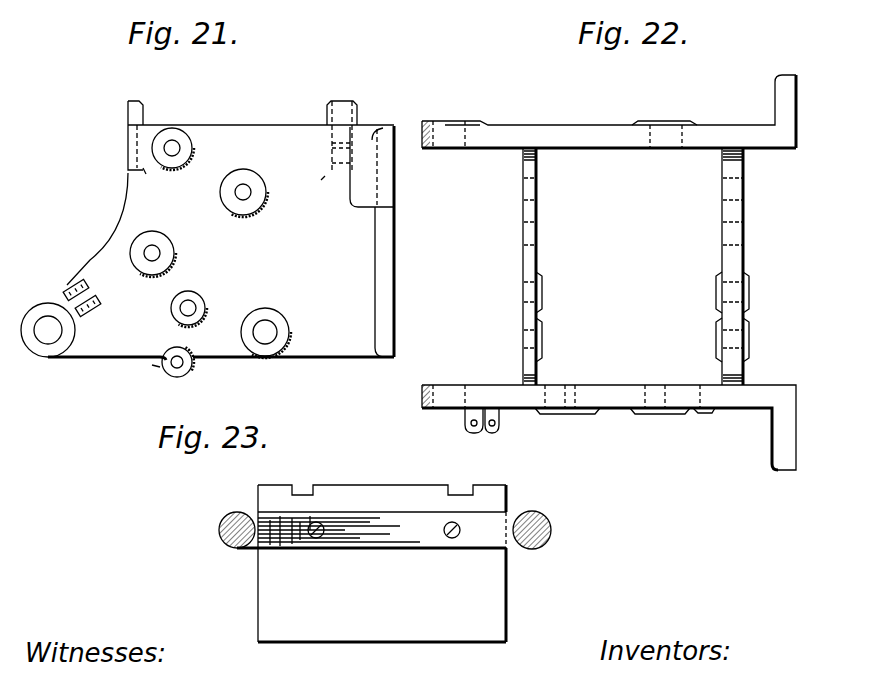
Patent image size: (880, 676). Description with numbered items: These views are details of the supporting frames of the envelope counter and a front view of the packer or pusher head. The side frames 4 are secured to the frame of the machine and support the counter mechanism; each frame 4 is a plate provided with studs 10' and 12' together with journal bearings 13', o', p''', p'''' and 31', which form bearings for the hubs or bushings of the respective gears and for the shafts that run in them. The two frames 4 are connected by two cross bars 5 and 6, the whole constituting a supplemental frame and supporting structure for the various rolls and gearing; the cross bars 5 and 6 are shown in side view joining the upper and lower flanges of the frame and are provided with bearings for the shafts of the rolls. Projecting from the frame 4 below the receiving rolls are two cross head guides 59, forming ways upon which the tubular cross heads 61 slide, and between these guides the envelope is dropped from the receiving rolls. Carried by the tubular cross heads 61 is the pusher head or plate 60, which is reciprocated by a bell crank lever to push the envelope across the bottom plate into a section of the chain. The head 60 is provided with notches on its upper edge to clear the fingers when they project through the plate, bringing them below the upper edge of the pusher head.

In FIG. 21, the side frame 4 is at (221, 230).
In FIG. 22, the side frame 4 is at (521, 424).
In FIG. 21, the stud 10' is at (185, 138).
In FIG. 21, the stud 12' is at (259, 192).
In FIG. 21, the journal bearing 13' is at (153, 241).
In FIG. 21, the journal bearing o' is at (196, 300).
In FIG. 21, the journal bearing p'''' is at (278, 327).
In FIG. 21, the journal bearing 31' is at (55, 346).
In FIG. 21, the journal bearing p''' is at (168, 375).
In FIG. 22, the cross bar 5 is at (536, 245).
In FIG. 22, the cross bar 6 is at (743, 245).
In FIG. 23, the cross head guide 59 is at (224, 516).
In FIG. 23, the pusher head 60 is at (382, 563).
In FIG. 23, the tubular cross head 61 is at (381, 542).